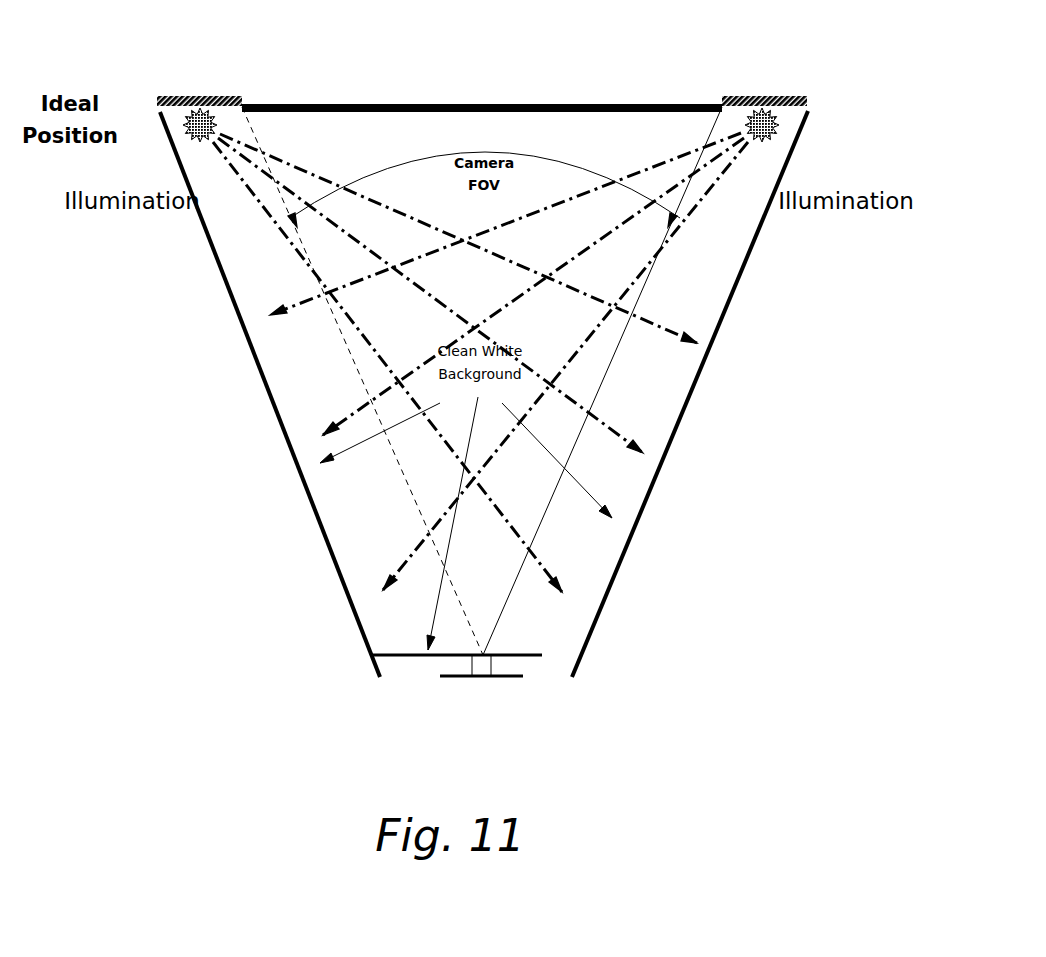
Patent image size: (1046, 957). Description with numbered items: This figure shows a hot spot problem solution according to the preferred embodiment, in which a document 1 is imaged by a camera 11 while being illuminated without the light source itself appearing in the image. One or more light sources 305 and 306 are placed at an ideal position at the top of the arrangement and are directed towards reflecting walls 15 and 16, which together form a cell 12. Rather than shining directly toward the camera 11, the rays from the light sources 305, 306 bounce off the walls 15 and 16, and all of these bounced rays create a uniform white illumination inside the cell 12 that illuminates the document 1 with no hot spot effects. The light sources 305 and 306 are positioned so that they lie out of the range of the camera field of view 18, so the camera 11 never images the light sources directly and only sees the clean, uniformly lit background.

The document 1 is at (595, 106).
The light source 305 is at (198, 130).
The light source 306 is at (782, 118).
The cell 12 is at (688, 308).
The reflecting wall 15 is at (290, 450).
The camera field of view 18 is at (352, 360).
The reflecting wall 16 is at (545, 655).
The camera 11 is at (483, 678).